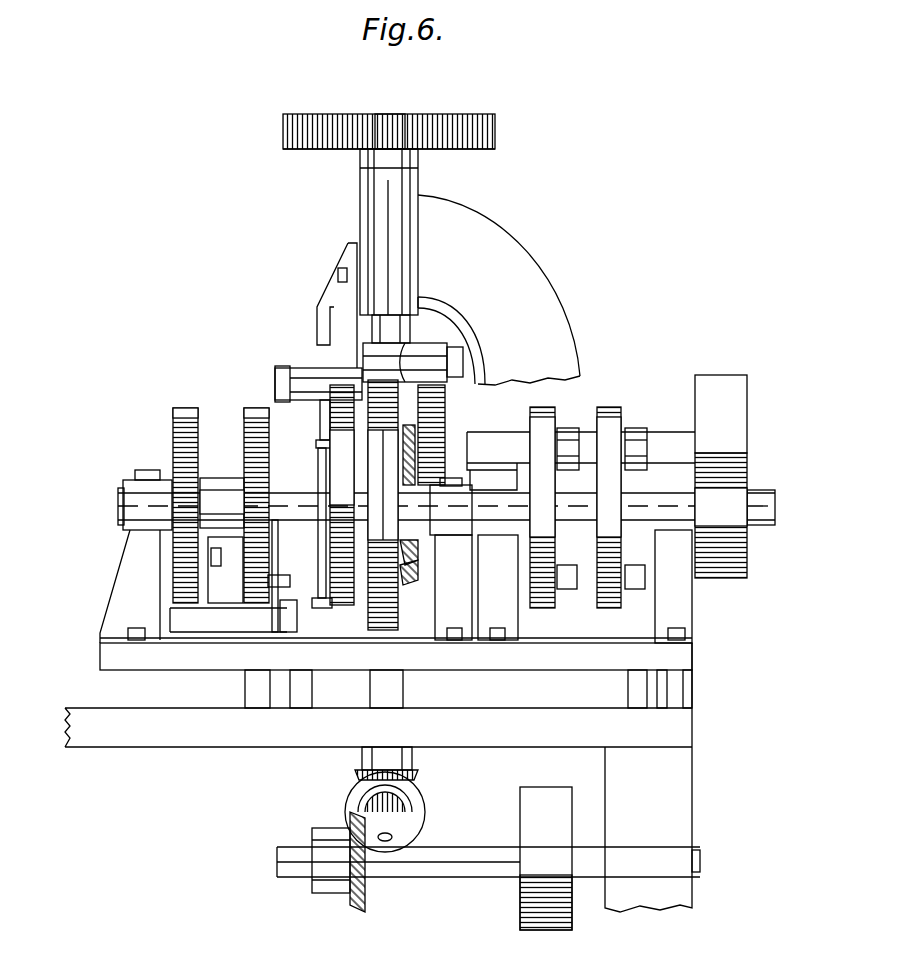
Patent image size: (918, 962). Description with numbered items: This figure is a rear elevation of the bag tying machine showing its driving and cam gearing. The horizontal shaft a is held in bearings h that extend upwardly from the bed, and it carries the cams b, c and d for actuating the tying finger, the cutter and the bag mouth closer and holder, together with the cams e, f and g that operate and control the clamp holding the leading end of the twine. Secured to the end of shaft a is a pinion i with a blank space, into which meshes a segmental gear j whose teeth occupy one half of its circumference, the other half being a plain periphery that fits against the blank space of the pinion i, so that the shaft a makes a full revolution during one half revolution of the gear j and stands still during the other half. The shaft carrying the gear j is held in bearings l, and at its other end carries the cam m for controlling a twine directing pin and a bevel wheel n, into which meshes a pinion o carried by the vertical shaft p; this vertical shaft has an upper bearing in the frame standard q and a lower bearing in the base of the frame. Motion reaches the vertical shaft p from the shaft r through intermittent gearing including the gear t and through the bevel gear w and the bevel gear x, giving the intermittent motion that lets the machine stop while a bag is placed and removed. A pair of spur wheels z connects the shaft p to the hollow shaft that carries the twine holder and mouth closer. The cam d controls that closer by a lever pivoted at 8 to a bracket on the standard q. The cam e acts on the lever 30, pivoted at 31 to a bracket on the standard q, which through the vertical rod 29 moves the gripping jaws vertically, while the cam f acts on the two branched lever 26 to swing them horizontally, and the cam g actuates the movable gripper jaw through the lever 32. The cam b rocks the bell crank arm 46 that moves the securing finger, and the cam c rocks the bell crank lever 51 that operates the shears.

The vertical shaft p is at (390, 114).
The spur wheels z is at (495, 131).
The frame standard q is at (470, 267).
The pivot 8 is at (432, 352).
The pivot 31 is at (283, 368).
The lever 30 is at (320, 418).
The vertical rod 29 is at (318, 470).
The two branched lever 26 is at (276, 580).
The lever 32 is at (208, 577).
The shaft a is at (118, 506).
The bearings h is at (135, 480).
The cam g is at (186, 408).
The cam f is at (256, 408).
The cam e is at (344, 605).
The cam d is at (380, 630).
The cam m is at (438, 440).
The bevel wheel n is at (415, 552).
The pinion o is at (416, 572).
The bearings l is at (478, 434).
The bell crank lever 51 is at (570, 430).
The arm of bell crank lever 46 is at (638, 430).
The cam c is at (546, 606).
The cam b is at (610, 606).
The segmental gear j is at (747, 440).
The pinion i is at (747, 566).
The bevel gear x is at (412, 775).
The bevel gear w is at (350, 822).
The shaft r is at (470, 870).
The intermittent gear t is at (520, 902).